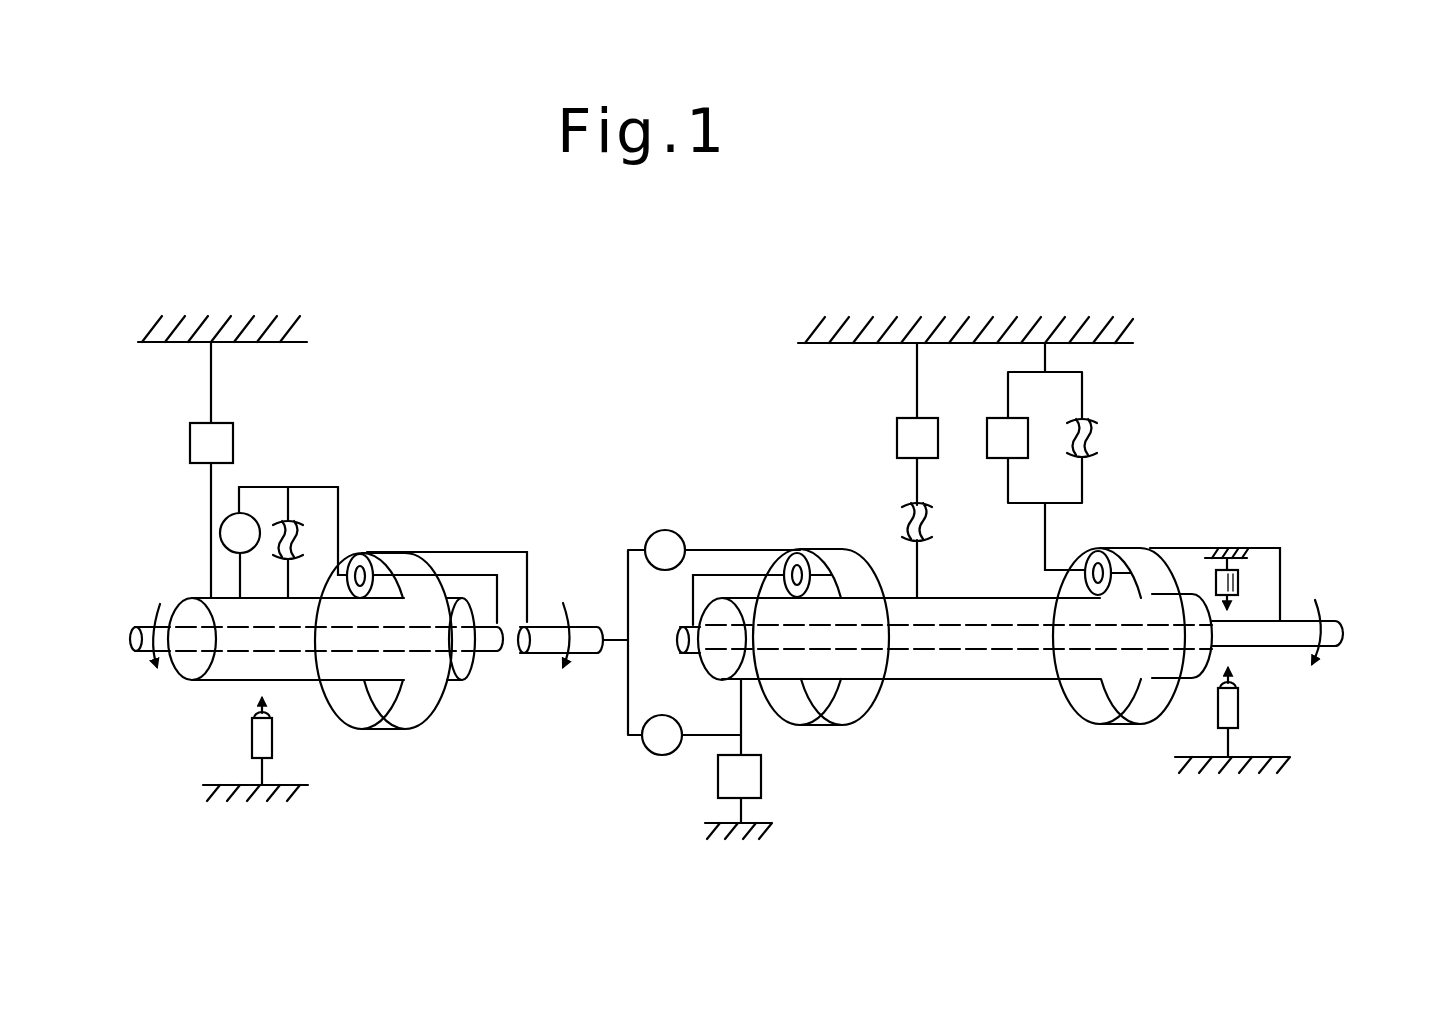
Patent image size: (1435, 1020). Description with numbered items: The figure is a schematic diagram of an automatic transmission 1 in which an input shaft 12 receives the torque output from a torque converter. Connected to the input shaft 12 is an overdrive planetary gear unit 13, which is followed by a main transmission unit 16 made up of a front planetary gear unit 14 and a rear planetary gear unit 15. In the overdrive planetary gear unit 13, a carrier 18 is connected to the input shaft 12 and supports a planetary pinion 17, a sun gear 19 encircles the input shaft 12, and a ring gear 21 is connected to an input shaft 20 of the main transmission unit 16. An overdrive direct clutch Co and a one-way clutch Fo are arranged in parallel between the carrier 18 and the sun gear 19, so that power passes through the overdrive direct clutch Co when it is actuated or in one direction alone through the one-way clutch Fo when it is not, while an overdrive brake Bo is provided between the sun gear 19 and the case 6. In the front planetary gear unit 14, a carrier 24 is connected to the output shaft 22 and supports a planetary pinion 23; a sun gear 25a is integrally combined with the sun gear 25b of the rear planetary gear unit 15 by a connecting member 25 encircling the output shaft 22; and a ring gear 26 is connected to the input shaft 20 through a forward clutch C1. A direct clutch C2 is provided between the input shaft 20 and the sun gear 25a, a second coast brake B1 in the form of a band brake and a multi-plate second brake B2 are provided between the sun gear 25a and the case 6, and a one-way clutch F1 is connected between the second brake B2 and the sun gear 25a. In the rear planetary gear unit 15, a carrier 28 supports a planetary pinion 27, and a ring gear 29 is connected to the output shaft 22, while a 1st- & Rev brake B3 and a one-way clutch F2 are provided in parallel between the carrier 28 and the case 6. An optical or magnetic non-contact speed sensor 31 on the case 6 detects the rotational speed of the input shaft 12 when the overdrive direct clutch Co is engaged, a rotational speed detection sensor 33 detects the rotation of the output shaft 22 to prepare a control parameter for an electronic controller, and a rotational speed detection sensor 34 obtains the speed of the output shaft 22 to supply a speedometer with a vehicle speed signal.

The automatic transmission 1 is at (665, 324).
The case 6 is at (271, 345).
The input shaft 12 is at (172, 633).
The overdrive planetary gear unit 13 is at (417, 546).
The front planetary gear unit 14 is at (838, 530).
The rear planetary gear unit 15 is at (1149, 519).
The main transmission unit 16 is at (815, 512).
The planetary pinion 17 is at (364, 552).
The carrier 18 is at (336, 486).
The sun gear 19 is at (300, 688).
The input shaft 20 is at (582, 645).
The ring gear 21 is at (418, 700).
The output shaft 22 is at (1283, 638).
The planetary pinion 23 is at (795, 552).
The carrier 24 is at (737, 572).
The connecting member 25 is at (983, 673).
The sun gear 25a is at (895, 678).
The sun gear 25b is at (1047, 678).
The ring gear 26 is at (843, 727).
The planetary pinion 27 is at (1100, 552).
The carrier 28 is at (1043, 545).
The ring gear 29 is at (1158, 572).
The speed sensor 31 is at (250, 741).
The rotational speed detection sensor 33 is at (1240, 588).
The rotational speed detection sensor 34 is at (1222, 708).
The overdrive brake Bo is at (211, 470).
The overdrive direct clutch Co is at (240, 555).
The one-way clutch Fo is at (279, 542).
The second coast brake B1 is at (738, 759).
The second brake B2 is at (917, 424).
The 1st- & Rev brake B3 is at (1034, 423).
The one-way clutch F1 is at (926, 550).
The one-way clutch F2 is at (1102, 439).
The forward clutch C1 is at (665, 550).
The direct clutch C2 is at (662, 735).